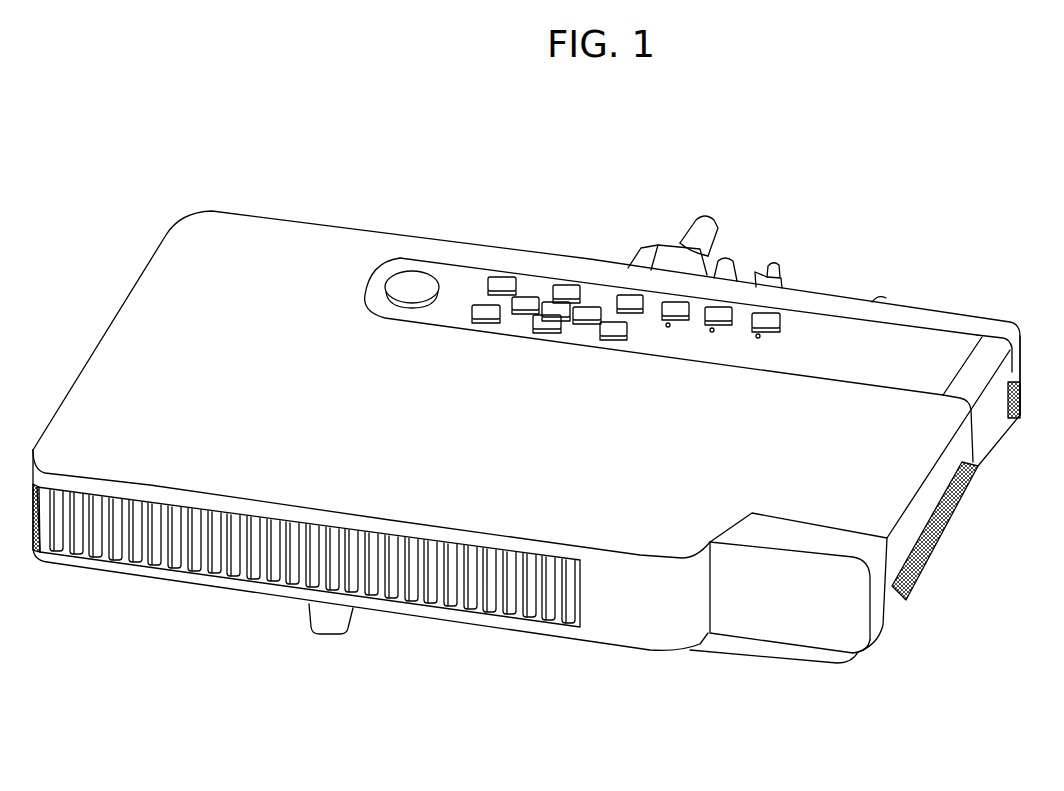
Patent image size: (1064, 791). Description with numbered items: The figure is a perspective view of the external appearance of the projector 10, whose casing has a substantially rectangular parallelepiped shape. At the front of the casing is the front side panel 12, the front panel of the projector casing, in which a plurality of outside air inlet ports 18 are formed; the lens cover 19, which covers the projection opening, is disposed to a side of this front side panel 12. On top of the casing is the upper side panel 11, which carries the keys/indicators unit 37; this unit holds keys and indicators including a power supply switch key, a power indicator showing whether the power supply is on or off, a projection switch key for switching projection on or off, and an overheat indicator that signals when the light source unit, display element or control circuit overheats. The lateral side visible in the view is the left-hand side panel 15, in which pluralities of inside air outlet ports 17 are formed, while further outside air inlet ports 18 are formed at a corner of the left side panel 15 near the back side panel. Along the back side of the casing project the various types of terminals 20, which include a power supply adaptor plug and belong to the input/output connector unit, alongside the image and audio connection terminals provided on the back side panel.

The projector 10 is at (495, 183).
The upper case (top cover) 11 is at (333, 237).
The lower case (bottom housing) 12 is at (616, 610).
The side surface of housing 15 is at (934, 489).
The seam between upper and lower case 17 is at (924, 561).
The air vents 18 is at (1012, 420).
The projection lens cover portion 19 is at (823, 623).
The connector terminals 20 is at (740, 223).
The operation panel 37 is at (567, 248).